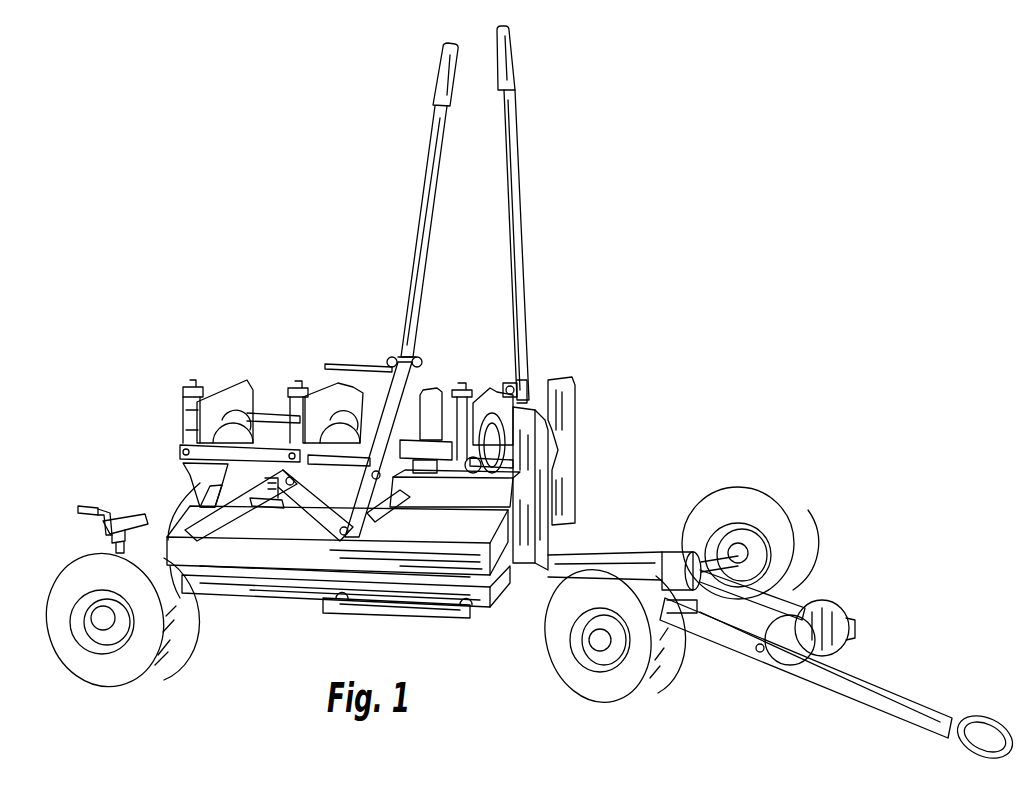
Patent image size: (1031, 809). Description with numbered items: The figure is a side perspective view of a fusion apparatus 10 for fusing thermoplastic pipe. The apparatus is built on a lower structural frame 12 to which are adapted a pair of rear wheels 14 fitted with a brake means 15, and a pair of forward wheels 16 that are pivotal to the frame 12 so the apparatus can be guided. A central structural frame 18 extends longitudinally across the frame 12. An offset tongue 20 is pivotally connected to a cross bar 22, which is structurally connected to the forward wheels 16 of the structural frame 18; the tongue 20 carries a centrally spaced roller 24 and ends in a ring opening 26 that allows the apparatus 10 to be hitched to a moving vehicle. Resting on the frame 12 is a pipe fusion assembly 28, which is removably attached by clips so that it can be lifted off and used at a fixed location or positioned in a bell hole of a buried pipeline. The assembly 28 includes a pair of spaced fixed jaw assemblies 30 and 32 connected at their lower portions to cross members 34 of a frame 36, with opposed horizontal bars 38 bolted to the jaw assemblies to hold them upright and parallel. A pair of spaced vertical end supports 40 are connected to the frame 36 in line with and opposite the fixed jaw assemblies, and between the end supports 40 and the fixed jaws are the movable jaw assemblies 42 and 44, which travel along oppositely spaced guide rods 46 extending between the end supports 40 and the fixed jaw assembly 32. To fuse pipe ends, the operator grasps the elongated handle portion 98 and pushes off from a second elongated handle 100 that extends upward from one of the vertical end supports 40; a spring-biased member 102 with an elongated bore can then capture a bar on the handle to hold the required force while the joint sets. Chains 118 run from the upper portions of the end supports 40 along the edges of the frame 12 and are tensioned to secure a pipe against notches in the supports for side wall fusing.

The fusion apparatus 10 is at (606, 352).
The lower structural frame 12 is at (486, 622).
The rear wheels 14 is at (178, 506).
The brake means 15 is at (123, 514).
The forward wheels 16 is at (745, 500).
The central structural frame 18 is at (592, 566).
The offset tongue 20 is at (858, 690).
The cross bar 22 is at (700, 554).
The roller 24 is at (826, 614).
The ring opening 26 is at (990, 735).
The pipe fusion assembly 28 is at (273, 344).
The fixed jaw assembly 30 is at (218, 385).
The fixed jaw assembly 32 is at (318, 388).
The cross members 34 is at (192, 505).
The frame 36 is at (233, 556).
The horizontal bars 38 is at (280, 455).
The vertical end supports 40 is at (528, 417).
The movable jaw assembly 42 is at (437, 385).
The movable jaw assembly 44 is at (492, 384).
The guide rods 46 is at (372, 384).
The elongated handle portion 98 is at (432, 170).
The second elongated handle 100 is at (514, 160).
The member 102 is at (528, 366).
The chains 118 is at (537, 462).